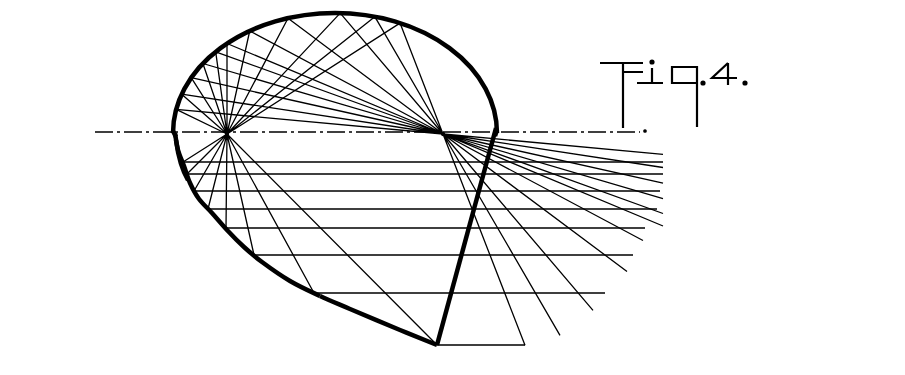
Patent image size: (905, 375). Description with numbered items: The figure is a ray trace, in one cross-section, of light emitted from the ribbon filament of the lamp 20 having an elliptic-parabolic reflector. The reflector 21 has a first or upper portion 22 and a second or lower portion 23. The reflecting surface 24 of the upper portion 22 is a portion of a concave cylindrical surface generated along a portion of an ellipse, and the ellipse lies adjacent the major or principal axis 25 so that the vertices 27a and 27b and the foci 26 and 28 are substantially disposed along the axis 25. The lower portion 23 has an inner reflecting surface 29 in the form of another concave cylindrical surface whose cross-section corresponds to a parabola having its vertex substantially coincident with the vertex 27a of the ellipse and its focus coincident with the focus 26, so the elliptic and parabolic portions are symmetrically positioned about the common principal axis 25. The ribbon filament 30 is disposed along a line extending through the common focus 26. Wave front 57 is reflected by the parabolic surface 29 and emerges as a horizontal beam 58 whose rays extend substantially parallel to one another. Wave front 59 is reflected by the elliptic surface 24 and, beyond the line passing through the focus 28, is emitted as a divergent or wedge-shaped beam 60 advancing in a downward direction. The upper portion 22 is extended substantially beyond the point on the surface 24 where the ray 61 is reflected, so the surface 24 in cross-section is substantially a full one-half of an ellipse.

The lamp 20 is at (102, 113).
The reflector 21 is at (181, 165).
The upper portion 22 is at (501, 88).
The lower portion 23 is at (242, 262).
The reflecting surface 24 is at (467, 64).
The principal axis 25 is at (373, 132).
The focus 26 is at (236, 138).
The vertex 27a is at (176, 131).
The vertex 27b is at (494, 131).
The focus 28 is at (445, 133).
The inner reflecting surface 29 is at (361, 303).
The ribbon filament 30 is at (198, 145).
The wave front 57 is at (217, 218).
The horizontal beam 58 is at (474, 302).
The wave front 59 is at (241, 54).
The divergent beam 60 is at (614, 270).
The ray 61 is at (405, 30).